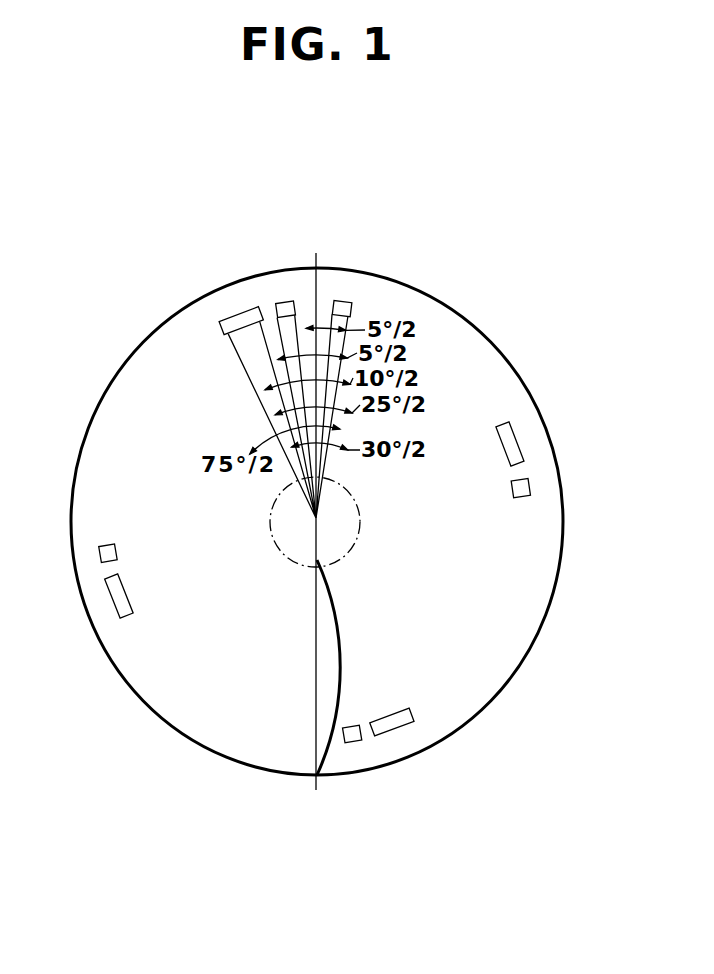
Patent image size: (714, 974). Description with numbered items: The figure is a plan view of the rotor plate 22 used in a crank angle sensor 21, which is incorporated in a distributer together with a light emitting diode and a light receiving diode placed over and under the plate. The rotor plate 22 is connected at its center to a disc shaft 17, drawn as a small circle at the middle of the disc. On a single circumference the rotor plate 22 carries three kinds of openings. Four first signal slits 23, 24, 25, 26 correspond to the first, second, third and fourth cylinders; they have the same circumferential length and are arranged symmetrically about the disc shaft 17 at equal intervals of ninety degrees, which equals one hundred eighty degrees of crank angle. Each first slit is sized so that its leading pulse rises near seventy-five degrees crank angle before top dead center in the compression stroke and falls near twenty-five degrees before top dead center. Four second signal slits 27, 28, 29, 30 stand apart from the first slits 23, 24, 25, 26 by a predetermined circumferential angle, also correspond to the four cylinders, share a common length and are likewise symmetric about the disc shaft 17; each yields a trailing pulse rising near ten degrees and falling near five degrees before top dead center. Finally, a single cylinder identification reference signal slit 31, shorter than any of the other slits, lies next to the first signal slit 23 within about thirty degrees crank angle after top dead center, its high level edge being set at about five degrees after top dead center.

The disc shaft 17 is at (343, 556).
The crank angle sensor 21 is at (481, 332).
The rotor plate 22 is at (508, 662).
The first signal slit 23 is at (240, 318).
The first signal slit 24 is at (512, 433).
The first signal slit 25 is at (393, 730).
The first signal slit 26 is at (110, 600).
The second signal slit 27 is at (283, 301).
The second signal slit 28 is at (530, 486).
The second signal slit 29 is at (353, 742).
The second signal slit 30 is at (100, 552).
The cylinder identification reference signal slit 31 is at (345, 301).